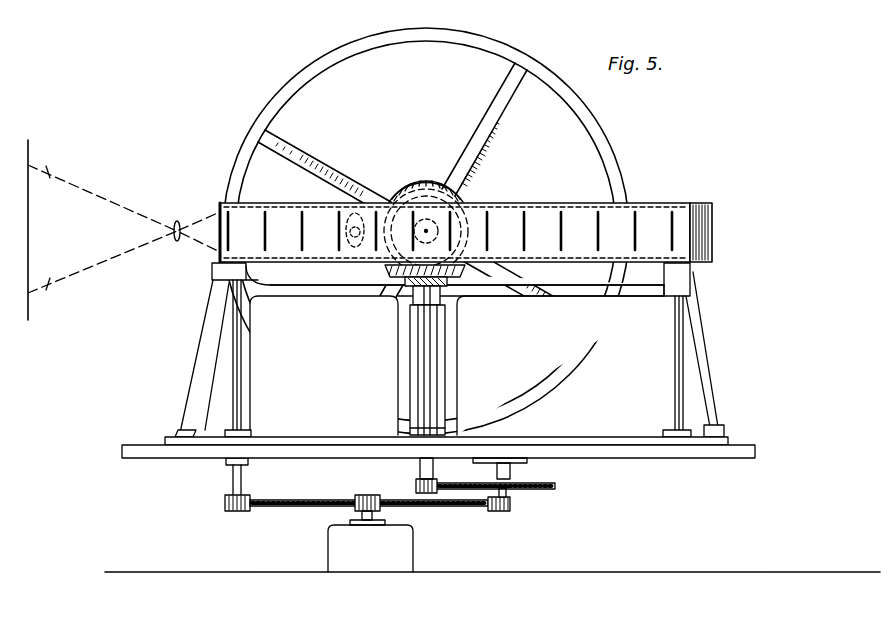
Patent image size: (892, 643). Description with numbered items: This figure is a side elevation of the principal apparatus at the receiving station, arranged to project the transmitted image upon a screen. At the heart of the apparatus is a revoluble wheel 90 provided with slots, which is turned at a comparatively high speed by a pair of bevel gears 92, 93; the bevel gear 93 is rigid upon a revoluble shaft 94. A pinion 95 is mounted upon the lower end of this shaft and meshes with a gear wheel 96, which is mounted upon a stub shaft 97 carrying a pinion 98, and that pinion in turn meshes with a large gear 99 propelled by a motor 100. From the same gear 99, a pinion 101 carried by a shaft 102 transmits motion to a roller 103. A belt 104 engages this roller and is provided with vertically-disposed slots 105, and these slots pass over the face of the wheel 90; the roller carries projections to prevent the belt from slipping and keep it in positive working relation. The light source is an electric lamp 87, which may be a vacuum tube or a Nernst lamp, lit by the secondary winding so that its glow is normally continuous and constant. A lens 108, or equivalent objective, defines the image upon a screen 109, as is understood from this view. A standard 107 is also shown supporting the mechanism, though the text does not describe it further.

The electric lamp 87 is at (345, 204).
The revoluble wheel 90 is at (367, 43).
The bevel gear 92 is at (412, 197).
The bevel gear 93 is at (385, 272).
The revoluble shaft 94 is at (432, 364).
The pinion 95 is at (415, 487).
The gear wheel 96 is at (540, 484).
The stub shaft 97 is at (508, 493).
The pinion 98 is at (508, 511).
The large gear 99 is at (462, 507).
The motor 100 is at (370, 534).
The pinion 101 is at (225, 503).
The shaft 102 is at (242, 393).
The roller 103 is at (222, 204).
The belt 104 is at (632, 201).
The vertically-disposed slots 105 is at (567, 222).
The standard 107 is at (676, 387).
The lens 108 is at (177, 242).
The screen 109 is at (30, 266).